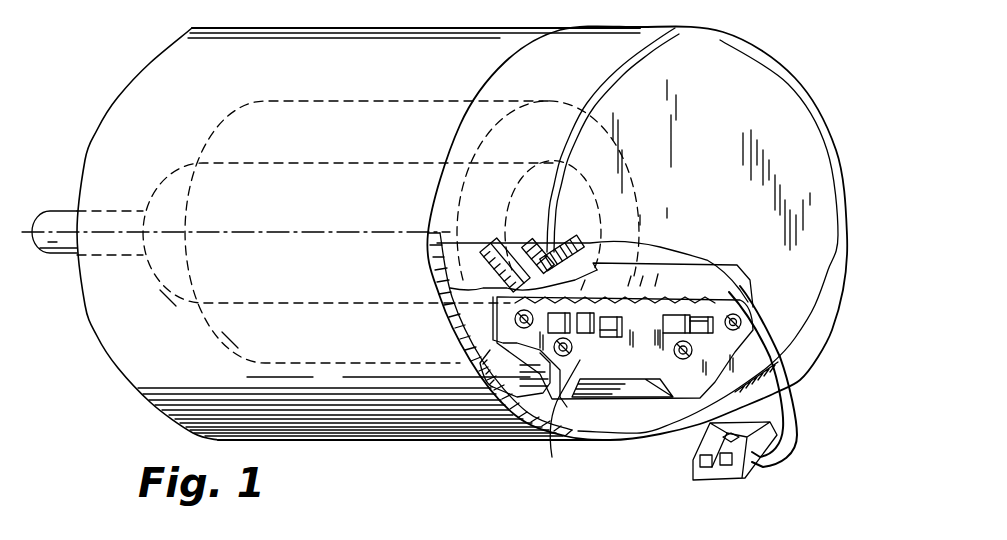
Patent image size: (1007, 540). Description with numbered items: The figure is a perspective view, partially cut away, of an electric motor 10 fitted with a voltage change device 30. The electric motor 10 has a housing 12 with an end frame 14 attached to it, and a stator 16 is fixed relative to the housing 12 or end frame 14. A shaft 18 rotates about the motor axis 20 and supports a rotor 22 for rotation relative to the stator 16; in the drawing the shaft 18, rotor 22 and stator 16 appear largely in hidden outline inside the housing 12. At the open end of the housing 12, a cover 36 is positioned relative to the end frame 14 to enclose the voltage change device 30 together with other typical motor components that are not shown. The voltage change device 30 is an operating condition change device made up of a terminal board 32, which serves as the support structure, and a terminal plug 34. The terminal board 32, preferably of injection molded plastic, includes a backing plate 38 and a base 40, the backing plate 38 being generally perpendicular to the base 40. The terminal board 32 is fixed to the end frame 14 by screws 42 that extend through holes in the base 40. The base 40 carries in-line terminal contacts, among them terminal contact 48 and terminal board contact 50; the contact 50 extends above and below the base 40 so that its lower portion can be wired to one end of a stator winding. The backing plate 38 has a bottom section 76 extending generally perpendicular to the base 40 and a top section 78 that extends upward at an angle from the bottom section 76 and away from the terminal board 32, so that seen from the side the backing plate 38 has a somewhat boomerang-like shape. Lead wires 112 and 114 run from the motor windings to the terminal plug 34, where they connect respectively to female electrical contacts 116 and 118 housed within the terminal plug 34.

The electric motor 10 is at (858, 94).
The housing 12 is at (473, 33).
The end frame 14 is at (457, 350).
The stator 16 is at (180, 373).
The shaft 18 is at (60, 221).
The motor axis 20 is at (63, 258).
The rotor 22 is at (372, 254).
The voltage change device 30 is at (670, 443).
The terminal board 32 is at (731, 368).
The terminal plug 34 is at (786, 461).
The cover 36 is at (745, 108).
The backing plate 38 is at (725, 275).
The base 40 is at (503, 295).
The screws 42 is at (515, 319).
The terminal contact 48 is at (556, 423).
The terminal board contact 50 is at (636, 342).
The bottom section 76 is at (590, 223).
The top section 78 is at (660, 262).
The lead wire 112 is at (780, 389).
The lead wire 114 is at (793, 403).
The terminal plug female electrical contact 116 is at (700, 472).
The terminal plug female electrical contact 118 is at (720, 480).